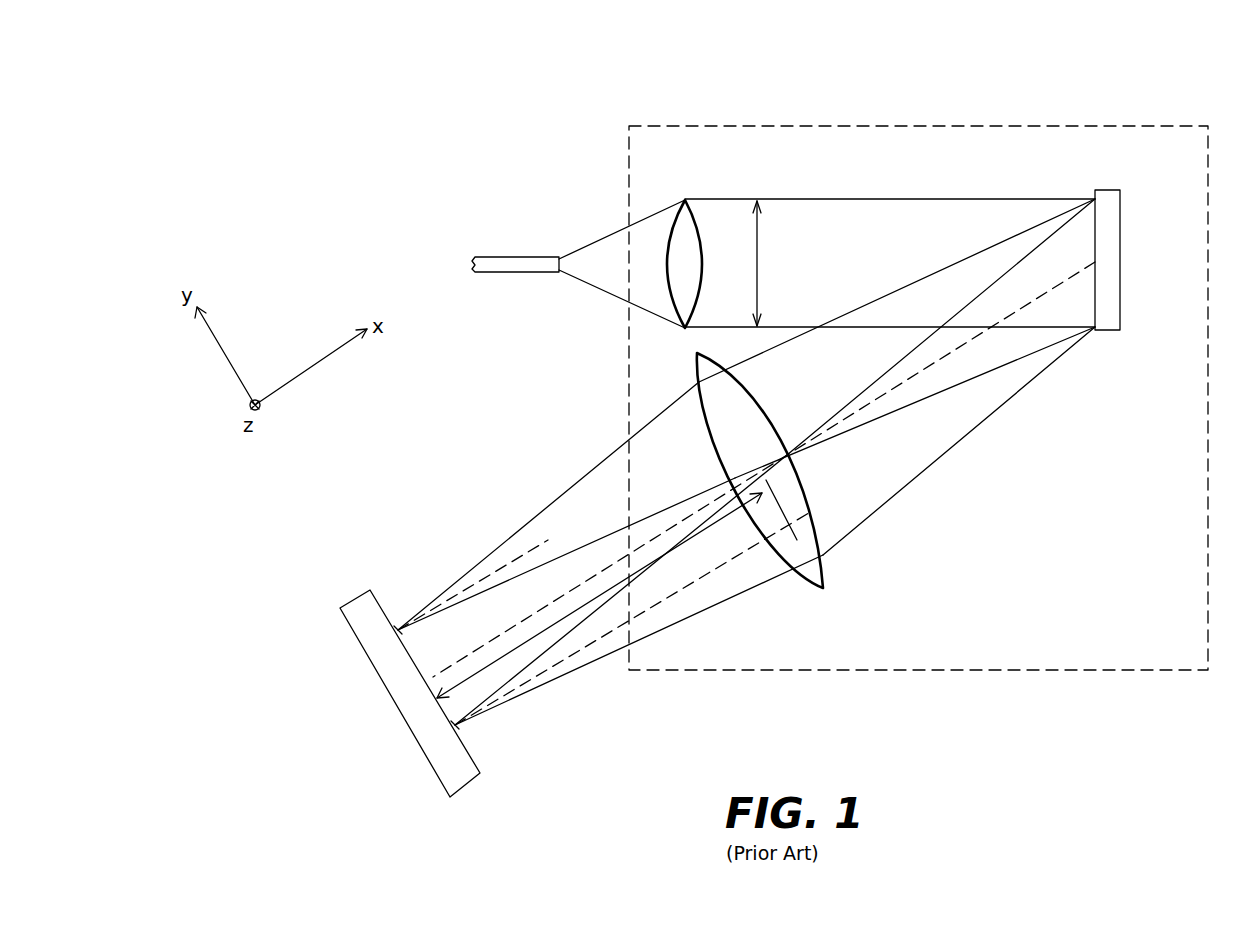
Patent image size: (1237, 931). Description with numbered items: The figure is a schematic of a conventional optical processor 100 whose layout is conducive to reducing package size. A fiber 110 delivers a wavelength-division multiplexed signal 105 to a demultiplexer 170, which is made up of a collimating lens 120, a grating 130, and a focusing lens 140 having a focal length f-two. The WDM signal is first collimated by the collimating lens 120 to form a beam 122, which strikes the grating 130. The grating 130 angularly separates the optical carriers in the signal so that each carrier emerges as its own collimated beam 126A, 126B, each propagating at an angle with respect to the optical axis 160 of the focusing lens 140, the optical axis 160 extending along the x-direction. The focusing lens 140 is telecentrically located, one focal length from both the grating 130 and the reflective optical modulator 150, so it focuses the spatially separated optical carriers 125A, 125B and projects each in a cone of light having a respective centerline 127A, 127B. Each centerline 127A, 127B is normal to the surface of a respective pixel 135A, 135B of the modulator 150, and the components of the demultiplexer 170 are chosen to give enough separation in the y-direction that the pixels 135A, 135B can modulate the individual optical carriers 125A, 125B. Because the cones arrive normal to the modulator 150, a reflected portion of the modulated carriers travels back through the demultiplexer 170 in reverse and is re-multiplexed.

The optical processor 100 is at (545, 112).
The wavelength-division multiplexed signal 105 is at (593, 246).
The fiber 110 is at (512, 274).
The collimating lens 120 is at (687, 201).
The beam 122 is at (878, 199).
The optical carrier 125A is at (515, 565).
The optical carrier 125B is at (507, 704).
The collimated beam 126A is at (845, 429).
The collimated beam 126B is at (852, 398).
The centerline 127A is at (540, 550).
The centerline 127B is at (548, 672).
The grating 130 is at (1118, 191).
The pixel 135A is at (398, 625).
The pixel 135B is at (458, 733).
The focusing lens 140 is at (826, 590).
The reflective optical modulator 150 is at (340, 605).
The optical axis 160 is at (962, 346).
The demultiplexer 170 is at (1103, 123).